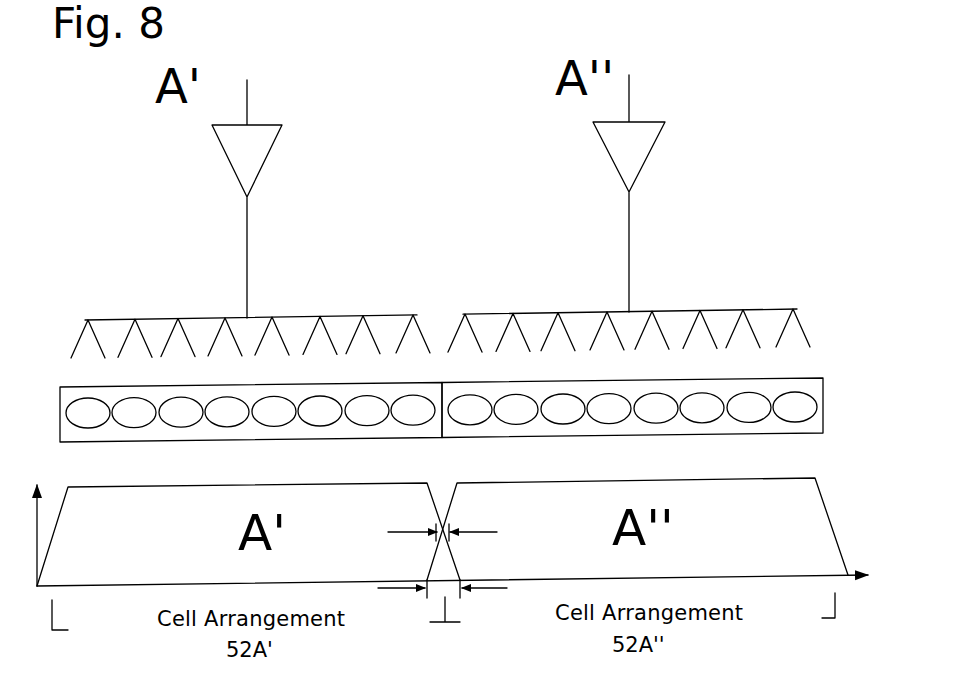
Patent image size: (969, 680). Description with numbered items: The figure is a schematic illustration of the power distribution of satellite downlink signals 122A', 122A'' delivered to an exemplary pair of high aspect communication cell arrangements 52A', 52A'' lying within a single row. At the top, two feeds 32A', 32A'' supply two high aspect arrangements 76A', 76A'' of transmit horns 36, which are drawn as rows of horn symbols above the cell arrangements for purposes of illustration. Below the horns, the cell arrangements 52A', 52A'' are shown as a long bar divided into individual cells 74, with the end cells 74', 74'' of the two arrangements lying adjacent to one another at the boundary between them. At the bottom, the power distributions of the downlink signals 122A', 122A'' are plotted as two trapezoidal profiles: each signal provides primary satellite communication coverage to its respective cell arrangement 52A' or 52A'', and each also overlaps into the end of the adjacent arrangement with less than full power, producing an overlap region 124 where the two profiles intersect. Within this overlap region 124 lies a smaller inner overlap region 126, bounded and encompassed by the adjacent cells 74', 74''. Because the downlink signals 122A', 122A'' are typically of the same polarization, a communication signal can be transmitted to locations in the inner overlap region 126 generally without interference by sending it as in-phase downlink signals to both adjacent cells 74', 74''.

The first antenna feed 32A' is at (261, 188).
The second antenna feed 32A'' is at (646, 184).
The transmit horns 36 is at (175, 318).
The high aspect arrangement of transmit horns 76A' is at (251, 283).
The high aspect arrangement of transmit horns 76A'' is at (630, 277).
The high aspect communication cell arrangement 52A' is at (226, 388).
The high aspect communication cell arrangement 52A'' is at (665, 375).
The cells 74 is at (441, 436).
The adjacent cell 74' is at (410, 436).
The adjacent cell 74'' is at (470, 436).
The satellite downlink signal 122A' is at (248, 534).
The satellite downlink signal 122A'' is at (637, 529).
The inner overlap region 126 is at (443, 530).
The overlap region 124 is at (452, 594).